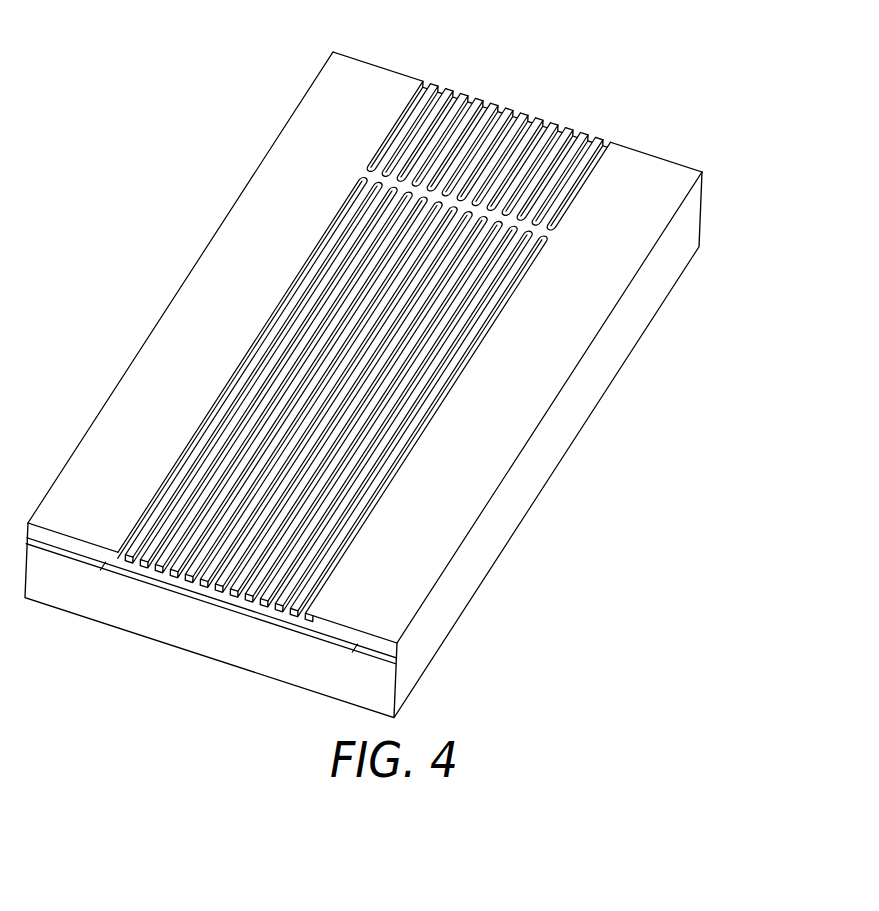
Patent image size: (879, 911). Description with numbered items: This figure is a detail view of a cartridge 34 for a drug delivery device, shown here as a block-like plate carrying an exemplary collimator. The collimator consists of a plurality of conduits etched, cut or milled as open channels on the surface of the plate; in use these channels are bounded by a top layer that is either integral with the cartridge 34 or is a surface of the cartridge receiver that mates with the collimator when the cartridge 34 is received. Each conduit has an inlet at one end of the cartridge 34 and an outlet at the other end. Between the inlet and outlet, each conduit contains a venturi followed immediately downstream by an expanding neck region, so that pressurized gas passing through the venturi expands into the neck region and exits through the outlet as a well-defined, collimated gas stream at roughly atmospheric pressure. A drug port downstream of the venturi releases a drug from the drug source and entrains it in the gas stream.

The cartridge 34 is at (141, 148).